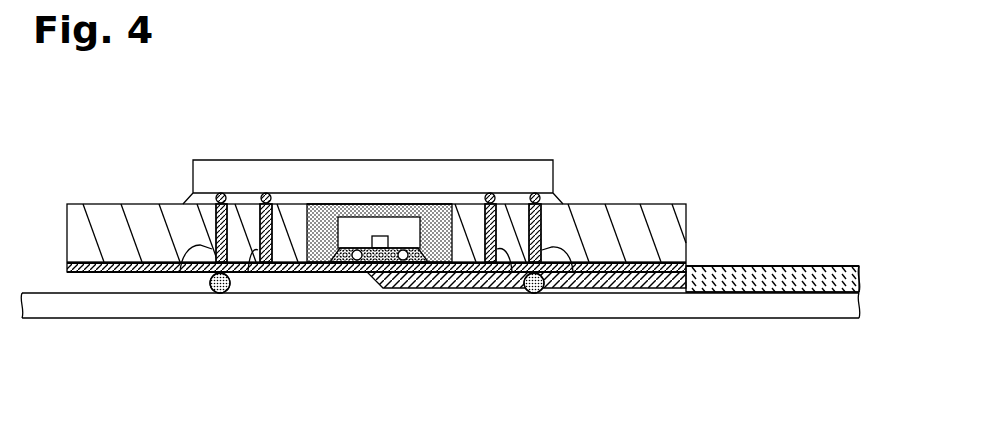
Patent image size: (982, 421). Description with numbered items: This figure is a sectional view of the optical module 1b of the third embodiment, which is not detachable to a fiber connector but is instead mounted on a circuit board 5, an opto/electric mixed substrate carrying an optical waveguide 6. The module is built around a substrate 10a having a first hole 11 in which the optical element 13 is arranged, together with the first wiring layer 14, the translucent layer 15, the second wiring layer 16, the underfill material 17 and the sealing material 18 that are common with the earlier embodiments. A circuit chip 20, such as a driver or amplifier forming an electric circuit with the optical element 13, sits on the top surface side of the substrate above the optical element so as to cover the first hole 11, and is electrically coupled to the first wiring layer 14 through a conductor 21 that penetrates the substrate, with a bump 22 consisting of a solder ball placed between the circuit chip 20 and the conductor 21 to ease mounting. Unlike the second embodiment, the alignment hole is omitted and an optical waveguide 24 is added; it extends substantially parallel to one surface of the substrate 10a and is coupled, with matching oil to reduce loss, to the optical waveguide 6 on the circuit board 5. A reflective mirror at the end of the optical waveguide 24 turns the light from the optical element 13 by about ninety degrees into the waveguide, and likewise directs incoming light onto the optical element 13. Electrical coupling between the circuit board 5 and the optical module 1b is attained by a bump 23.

The optical module 1b is at (652, 101).
The circuit board 5 is at (823, 316).
The optical waveguide 6 is at (750, 288).
The substrate 10a is at (672, 225).
The first hole 11 is at (347, 190).
The optical element 13 is at (378, 236).
The first wiring layer 14 is at (97, 262).
The translucent layer 15 is at (622, 262).
The second wiring layer 16 is at (82, 266).
The underfill material 17 is at (345, 263).
The sealing material 18 is at (318, 222).
The circuit chip 20 is at (436, 175).
The conductor 21 is at (180, 272).
The bump 22 is at (221, 193).
The bump 23 is at (215, 293).
The optical waveguide 24 is at (408, 288).